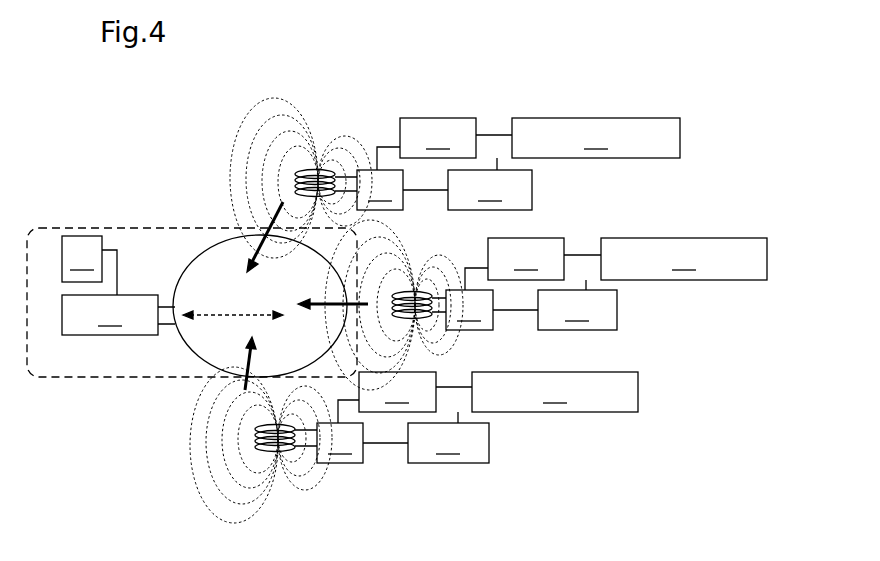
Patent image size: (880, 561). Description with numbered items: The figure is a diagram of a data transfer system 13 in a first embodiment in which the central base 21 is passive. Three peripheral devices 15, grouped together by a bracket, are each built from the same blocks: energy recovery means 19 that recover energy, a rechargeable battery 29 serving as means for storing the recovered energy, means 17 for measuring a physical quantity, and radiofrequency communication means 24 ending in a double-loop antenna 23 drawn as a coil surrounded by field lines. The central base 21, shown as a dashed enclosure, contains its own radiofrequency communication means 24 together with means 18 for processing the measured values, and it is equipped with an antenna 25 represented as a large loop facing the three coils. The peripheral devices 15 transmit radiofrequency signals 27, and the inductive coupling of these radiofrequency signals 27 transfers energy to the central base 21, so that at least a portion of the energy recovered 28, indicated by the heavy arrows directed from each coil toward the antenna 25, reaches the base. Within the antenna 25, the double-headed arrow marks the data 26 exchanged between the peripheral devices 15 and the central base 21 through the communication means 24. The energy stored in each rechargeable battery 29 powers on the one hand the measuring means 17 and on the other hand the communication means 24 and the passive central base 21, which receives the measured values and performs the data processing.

The data transfer system 13 is at (160, 157).
The peripheral devices 15 is at (748, 86).
The means for measuring a physical quantity 17 is at (512, 316).
The means for processing the measured values 18 is at (82, 259).
The energy recovery means 19 is at (619, 265).
The central base 21 is at (95, 228).
The double-loop antenna 23 is at (318, 160).
The radiofrequency communication means 24 is at (277, 316).
The antenna 25 is at (177, 342).
The data 26 is at (235, 313).
The radiofrequency signals 27 is at (248, 110).
The energy recovered 28 is at (262, 240).
The rechargeable battery 29 is at (461, 265).